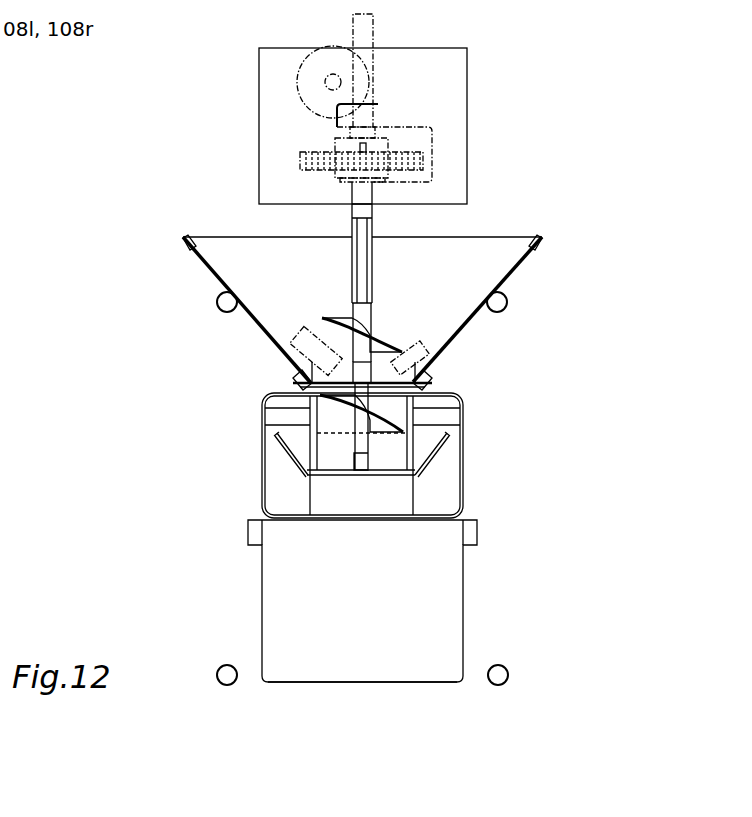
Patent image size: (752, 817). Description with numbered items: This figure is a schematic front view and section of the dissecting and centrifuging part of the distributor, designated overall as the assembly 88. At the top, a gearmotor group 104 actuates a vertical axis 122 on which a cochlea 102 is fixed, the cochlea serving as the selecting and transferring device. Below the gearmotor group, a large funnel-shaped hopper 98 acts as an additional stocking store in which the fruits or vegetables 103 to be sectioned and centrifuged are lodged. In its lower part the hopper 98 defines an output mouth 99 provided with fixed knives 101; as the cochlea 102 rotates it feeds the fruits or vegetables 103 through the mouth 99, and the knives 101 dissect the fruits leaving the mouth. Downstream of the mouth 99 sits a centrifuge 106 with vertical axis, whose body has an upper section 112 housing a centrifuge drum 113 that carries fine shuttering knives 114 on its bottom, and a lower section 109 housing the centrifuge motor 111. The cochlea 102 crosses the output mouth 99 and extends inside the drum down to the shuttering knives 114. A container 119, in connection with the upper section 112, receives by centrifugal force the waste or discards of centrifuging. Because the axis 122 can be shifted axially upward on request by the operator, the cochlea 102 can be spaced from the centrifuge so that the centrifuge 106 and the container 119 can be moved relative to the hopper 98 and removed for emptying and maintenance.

The hopper assembly 88 is at (492, 348).
The hopper 98 is at (210, 268).
The output mouth 99 is at (305, 382).
The fixed knives 101 is at (430, 365).
The cochlea 102 is at (337, 318).
The fruits or vegetables 103 is at (296, 341).
The gearmotor group 104 is at (495, 87).
The centrifuge 106 is at (202, 545).
The lower section 109 is at (452, 607).
The centrifuge motor 111 is at (299, 614).
The upper section 112 is at (263, 448).
The centrifuge drum 113 is at (432, 457).
The fine shuttering knives 114 is at (330, 473).
The container 119 is at (317, 447).
The axis 122 is at (372, 292).